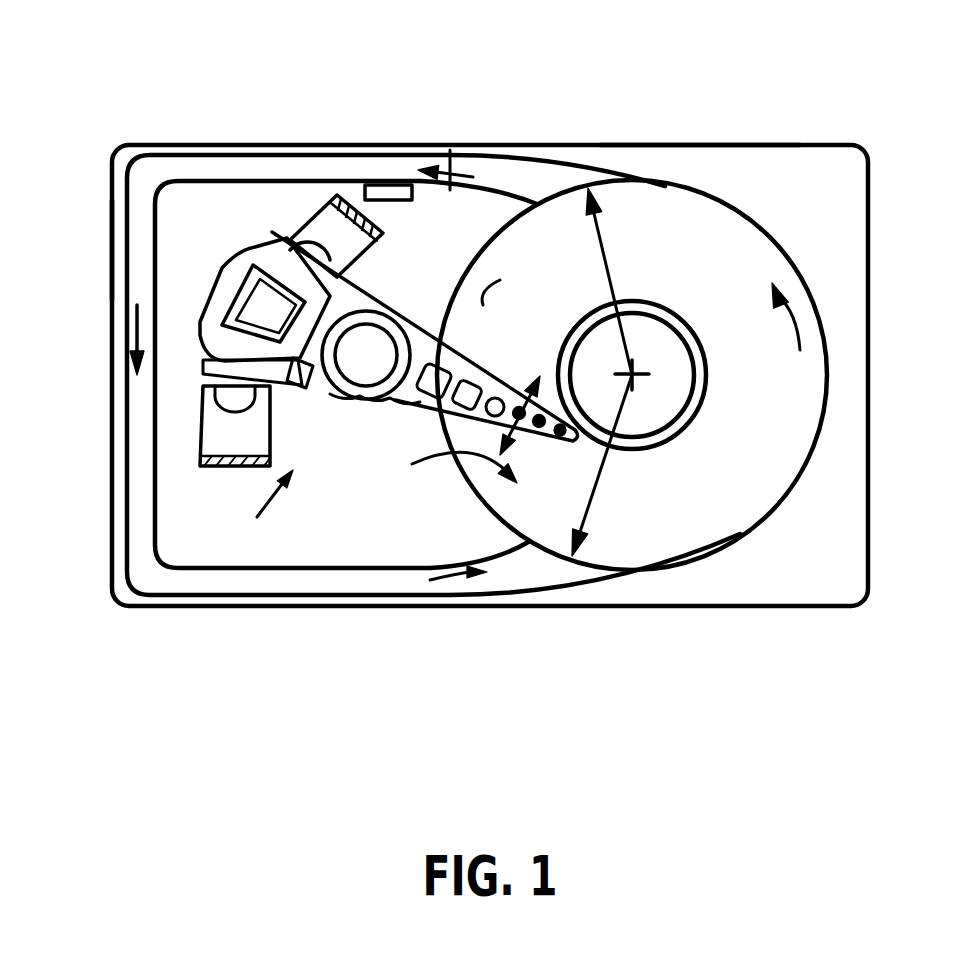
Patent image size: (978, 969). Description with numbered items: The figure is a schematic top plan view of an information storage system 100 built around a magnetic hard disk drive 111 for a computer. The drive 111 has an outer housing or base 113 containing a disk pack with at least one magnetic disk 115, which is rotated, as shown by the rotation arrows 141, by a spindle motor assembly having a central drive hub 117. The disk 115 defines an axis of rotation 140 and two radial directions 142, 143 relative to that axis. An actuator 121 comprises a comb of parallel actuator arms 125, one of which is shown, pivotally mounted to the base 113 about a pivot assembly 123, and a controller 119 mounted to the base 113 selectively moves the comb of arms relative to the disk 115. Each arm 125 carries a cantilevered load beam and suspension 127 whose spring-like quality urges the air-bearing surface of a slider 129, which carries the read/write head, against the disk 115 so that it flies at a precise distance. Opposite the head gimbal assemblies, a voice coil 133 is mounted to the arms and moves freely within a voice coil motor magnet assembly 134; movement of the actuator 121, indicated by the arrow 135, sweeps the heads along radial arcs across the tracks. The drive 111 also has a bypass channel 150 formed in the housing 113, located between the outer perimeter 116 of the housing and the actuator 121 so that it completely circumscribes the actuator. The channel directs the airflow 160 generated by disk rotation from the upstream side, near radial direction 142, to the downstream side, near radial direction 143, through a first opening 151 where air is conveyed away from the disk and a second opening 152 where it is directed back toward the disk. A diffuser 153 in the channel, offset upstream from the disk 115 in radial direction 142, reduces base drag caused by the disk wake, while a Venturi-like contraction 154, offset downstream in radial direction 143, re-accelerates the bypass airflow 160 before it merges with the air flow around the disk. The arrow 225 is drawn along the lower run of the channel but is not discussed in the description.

The information storage system 100 is at (113, 36).
The magnetic hard disk drive 111 is at (870, 485).
The outer housing or base 113 is at (762, 145).
The magnetic disk 115 is at (708, 218).
The outer perimeter of the housing 116 is at (108, 226).
The central drive hub 117 is at (662, 303).
The controller 119 is at (400, 200).
The actuator 121 is at (265, 393).
The pivot assembly 123 is at (345, 404).
The actuator arm 125 is at (425, 330).
The cantilevered load beam and suspension 127 is at (478, 365).
The slider 129 is at (553, 430).
The voice coil 133 is at (233, 262).
The voice coil motor magnet assembly 134 is at (323, 223).
The arrow indicating actuator movement 135 is at (441, 467).
The axis of rotation 140 is at (645, 385).
The rotation arrows 141 is at (800, 350).
The first radial direction 142 is at (610, 255).
The second radial direction 143 is at (590, 505).
The bypass channel 150 is at (365, 176).
The first opening 151 is at (560, 197).
The second opening 152 is at (553, 557).
The diffuser 153 is at (572, 163).
The contraction 154 is at (517, 567).
The airflow 160 is at (128, 325).
The tape travel direction 225 is at (443, 580).